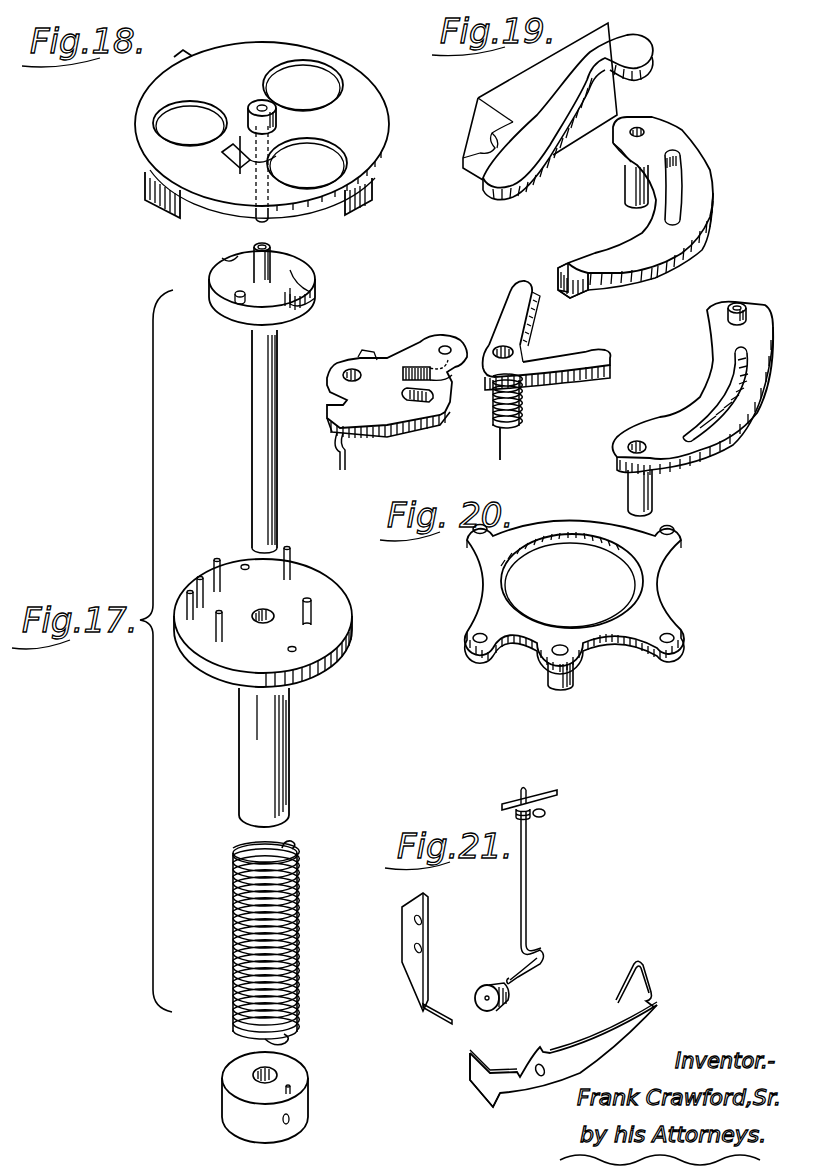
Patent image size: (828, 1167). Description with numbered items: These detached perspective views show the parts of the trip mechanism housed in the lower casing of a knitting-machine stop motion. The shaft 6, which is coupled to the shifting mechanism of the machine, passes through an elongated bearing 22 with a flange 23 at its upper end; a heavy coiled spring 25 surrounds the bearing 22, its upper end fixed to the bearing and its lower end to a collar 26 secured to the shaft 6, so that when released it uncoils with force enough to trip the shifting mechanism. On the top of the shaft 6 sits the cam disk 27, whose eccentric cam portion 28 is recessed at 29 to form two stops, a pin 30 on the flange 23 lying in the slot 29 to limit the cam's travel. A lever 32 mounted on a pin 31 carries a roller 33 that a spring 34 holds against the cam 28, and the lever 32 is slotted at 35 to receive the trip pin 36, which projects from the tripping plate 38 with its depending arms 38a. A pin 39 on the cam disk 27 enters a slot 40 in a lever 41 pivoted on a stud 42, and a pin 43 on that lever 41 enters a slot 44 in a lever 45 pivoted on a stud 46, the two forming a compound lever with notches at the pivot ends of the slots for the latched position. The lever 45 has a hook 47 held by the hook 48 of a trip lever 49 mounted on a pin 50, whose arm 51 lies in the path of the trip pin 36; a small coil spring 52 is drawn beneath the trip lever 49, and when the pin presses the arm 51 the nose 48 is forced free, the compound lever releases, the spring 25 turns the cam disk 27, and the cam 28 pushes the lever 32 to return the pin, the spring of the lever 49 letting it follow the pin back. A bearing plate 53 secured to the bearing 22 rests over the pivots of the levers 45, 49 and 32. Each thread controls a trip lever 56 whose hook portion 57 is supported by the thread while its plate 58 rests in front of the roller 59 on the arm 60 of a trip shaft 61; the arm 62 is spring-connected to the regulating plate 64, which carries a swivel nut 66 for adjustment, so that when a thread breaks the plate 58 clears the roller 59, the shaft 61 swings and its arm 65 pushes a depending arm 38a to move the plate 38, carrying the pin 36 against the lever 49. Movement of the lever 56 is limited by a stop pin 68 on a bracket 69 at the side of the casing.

In FIG. 17, the shaft 6 is at (251, 448).
In FIG. 17, the elongated bearing 22 is at (291, 718).
In FIG. 17, the flange 23 is at (344, 638).
In FIG. 17, the coiled spring 25 is at (298, 953).
In FIG. 17, the collar 26 is at (306, 1096).
In FIG. 17, the cam disk 27 is at (312, 290).
In FIG. 18, the eccentric cam portion 28 is at (262, 174).
In FIG. 17, the eccentric cam portion 28 is at (238, 254).
In FIG. 17, the recess (slot) 29 is at (298, 316).
In FIG. 17, the pin 30 is at (312, 605).
In FIG. 17, the pin 31 is at (216, 558).
In FIG. 19, the lever 32 is at (343, 363).
In FIG. 19, the roller 33 is at (452, 392).
In FIG. 19, the spring 34 is at (340, 438).
In FIG. 19, the slot 35 is at (418, 385).
In FIG. 18, the trip pin 36 is at (232, 158).
In FIG. 18, the tripping plate (disk) 38 is at (262, 130).
In FIG. 18, the depending arms 38a is at (147, 78).
In FIG. 17, the pin 39 is at (239, 291).
In FIG. 19, the slot 40 is at (760, 390).
In FIG. 19, the lever 41 is at (734, 447).
In FIG. 17, the stud 42 is at (222, 628).
In FIG. 19, the pin 43 is at (746, 308).
In FIG. 19, the slot 44 is at (682, 190).
In FIG. 19, the lever 45 is at (635, 207).
In FIG. 17, the stud 46 is at (291, 558).
In FIG. 19, the hook 47 is at (568, 262).
In FIG. 19, the hook (nose) 48 is at (601, 355).
In FIG. 19, the trip lever 49 is at (514, 350).
In FIG. 17, the pin 50 is at (189, 592).
In FIG. 19, the arm 51 is at (512, 294).
In FIG. 19, the spring 52 is at (521, 404).
In FIG. 19, the bearing plate 53 is at (558, 111).
In FIG. 21, the trip lever 56 is at (578, 1050).
In FIG. 21, the hook portion 57 is at (644, 968).
In FIG. 21, the plate 58 is at (478, 1068).
In FIG. 21, the roller 59 is at (490, 983).
In FIG. 21, the arm 60 is at (522, 980).
In FIG. 21, the trip shaft 61 is at (528, 888).
In FIG. 21, the arm 62 is at (545, 813).
In FIG. 20, the regulating plate 64 is at (481, 580).
In FIG. 21, the arm 65 is at (545, 792).
In FIG. 20, the swivel nut 66 is at (574, 680).
In FIG. 21, the stop pin 68 is at (442, 1010).
In FIG. 21, the bracket 69 is at (424, 962).